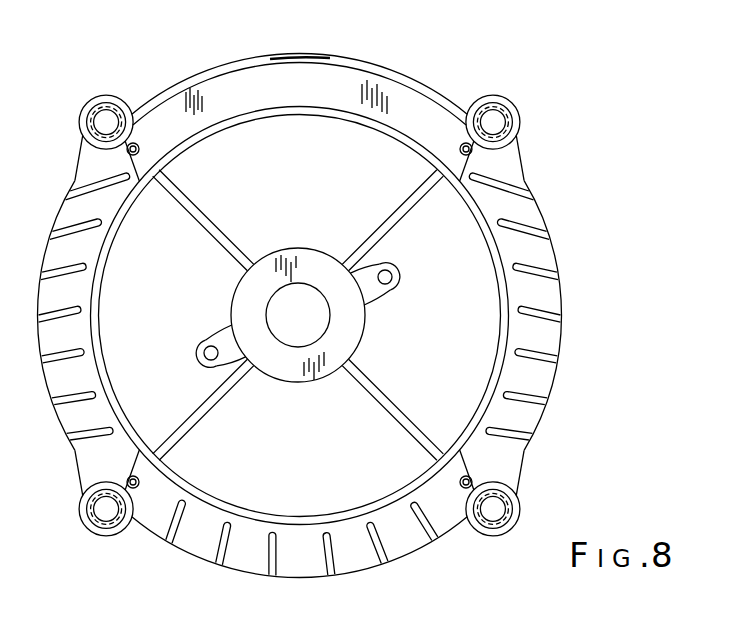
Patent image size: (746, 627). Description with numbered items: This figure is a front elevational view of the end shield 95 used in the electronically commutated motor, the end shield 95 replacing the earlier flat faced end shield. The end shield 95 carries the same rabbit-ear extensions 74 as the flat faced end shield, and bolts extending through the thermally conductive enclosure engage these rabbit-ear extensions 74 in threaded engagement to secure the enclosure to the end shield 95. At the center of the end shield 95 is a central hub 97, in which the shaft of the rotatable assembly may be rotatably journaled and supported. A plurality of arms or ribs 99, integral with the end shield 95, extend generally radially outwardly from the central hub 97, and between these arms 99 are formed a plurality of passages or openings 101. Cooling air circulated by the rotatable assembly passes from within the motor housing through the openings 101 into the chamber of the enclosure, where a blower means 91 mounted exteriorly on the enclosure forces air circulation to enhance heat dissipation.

The end shield 95 is at (263, 47).
The blower means 91 is at (401, 87).
The rabbit-ear extensions 74 is at (81, 110).
The central hub 97 is at (353, 319).
The arms or ribs 99 is at (208, 232).
The passages or openings 101 is at (258, 172).